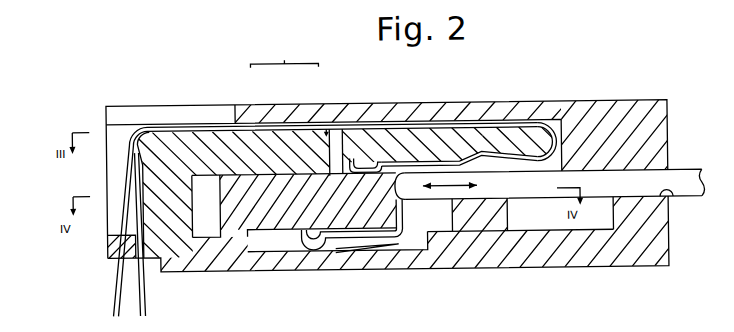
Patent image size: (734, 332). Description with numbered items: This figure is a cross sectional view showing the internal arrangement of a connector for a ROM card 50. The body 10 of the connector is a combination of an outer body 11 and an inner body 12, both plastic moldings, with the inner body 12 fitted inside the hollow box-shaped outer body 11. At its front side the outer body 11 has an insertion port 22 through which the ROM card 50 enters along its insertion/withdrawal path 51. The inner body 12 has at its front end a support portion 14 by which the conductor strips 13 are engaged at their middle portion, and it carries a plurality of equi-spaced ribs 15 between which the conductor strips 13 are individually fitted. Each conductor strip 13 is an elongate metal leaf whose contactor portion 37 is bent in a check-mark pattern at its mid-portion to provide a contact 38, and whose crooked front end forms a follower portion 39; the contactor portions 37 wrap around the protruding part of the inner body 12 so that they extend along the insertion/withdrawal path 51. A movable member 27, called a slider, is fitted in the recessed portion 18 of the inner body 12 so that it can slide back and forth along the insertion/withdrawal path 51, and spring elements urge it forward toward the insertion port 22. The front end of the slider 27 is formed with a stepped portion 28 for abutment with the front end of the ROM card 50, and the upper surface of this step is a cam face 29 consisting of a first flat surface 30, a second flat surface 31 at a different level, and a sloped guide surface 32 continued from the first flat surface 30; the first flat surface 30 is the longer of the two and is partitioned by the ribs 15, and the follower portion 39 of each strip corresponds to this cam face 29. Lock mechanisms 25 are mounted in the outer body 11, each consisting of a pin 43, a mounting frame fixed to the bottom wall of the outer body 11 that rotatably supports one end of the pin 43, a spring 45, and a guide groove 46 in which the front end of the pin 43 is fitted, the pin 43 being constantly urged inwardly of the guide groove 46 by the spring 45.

The body 10 is at (667, 96).
The outer body 11 is at (623, 105).
The inner body 12 is at (188, 138).
The conductor strip 13 is at (378, 124).
The support portion 14 is at (534, 144).
The rib 15 is at (547, 126).
The recessed portion 18 is at (205, 225).
The insertion port 22 is at (673, 198).
The lock mechanism 25 is at (407, 244).
The movable member 27 is at (273, 216).
The stepped portion 28 is at (392, 178).
The cam face 29 is at (284, 53).
The first flat surface 30 is at (292, 150).
The second flat surface 31 is at (333, 130).
The sloped guide surface 32 is at (308, 150).
The contactor portion 37 is at (438, 150).
The contact 38 is at (469, 158).
The follower portion 39 is at (365, 168).
The pin 43 is at (358, 240).
The spring 45 is at (376, 247).
The guide groove 46 is at (437, 225).
The ROM card 50 is at (695, 174).
The insertion/withdrawal path 51 is at (477, 186).